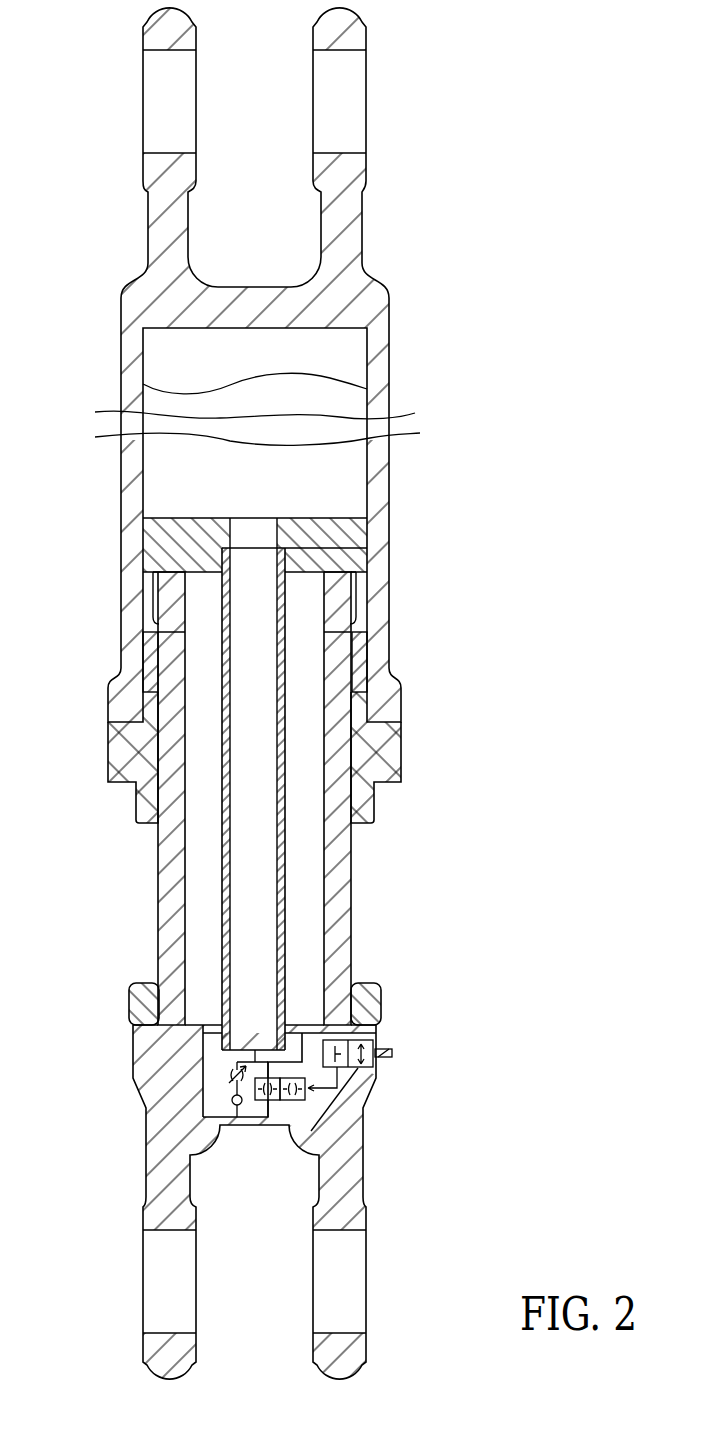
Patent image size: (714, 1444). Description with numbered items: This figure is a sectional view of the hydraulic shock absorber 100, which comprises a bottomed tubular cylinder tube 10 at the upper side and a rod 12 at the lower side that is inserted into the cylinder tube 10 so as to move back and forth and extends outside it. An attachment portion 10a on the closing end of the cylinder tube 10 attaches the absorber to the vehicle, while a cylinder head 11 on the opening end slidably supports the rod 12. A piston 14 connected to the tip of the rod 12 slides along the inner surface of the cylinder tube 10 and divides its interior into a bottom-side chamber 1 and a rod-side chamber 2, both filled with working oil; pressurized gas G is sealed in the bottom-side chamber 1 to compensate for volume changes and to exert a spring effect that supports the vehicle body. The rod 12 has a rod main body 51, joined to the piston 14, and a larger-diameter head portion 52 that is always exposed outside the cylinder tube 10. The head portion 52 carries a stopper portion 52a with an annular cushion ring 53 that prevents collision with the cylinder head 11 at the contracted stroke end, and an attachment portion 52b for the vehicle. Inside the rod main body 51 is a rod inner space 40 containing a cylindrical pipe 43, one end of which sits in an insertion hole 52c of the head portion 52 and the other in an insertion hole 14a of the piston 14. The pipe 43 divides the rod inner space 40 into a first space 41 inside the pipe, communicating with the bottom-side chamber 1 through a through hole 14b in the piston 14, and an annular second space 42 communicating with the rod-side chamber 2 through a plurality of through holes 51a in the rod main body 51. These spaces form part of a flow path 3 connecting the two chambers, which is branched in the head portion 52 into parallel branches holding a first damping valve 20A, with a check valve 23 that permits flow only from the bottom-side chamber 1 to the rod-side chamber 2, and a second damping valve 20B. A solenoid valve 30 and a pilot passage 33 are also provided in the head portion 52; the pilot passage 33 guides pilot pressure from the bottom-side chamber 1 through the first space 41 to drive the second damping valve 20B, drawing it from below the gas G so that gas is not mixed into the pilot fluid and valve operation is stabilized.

The hydraulic shock absorber 100 is at (450, 170).
The cylinder tube 10 is at (386, 397).
The attachment portion 10a is at (168, 152).
The bottom-side chamber 1 is at (165, 470).
The pressurized gas G is at (165, 352).
The piston 14 is at (312, 515).
The insertion hole 14a is at (367, 553).
The through hole 14b is at (253, 528).
The rod inner space 40 is at (251, 799).
The first space 41 is at (250, 846).
The pipe 43 is at (287, 946).
The rod main body 51 is at (315, 798).
The through holes 51a is at (150, 620).
The rod-side chamber 2 is at (150, 660).
The second space 42 is at (205, 712).
The cylinder head 11 is at (381, 770).
The rod 12 is at (356, 846).
The cushion ring 53 is at (209, 979).
The stopper portion 52a is at (140, 1005).
The head portion 52 is at (252, 1199).
The attachment portion 52b is at (340, 1232).
The insertion hole 52c is at (223, 1035).
The flow path 3 is at (203, 1070).
The first damping valve 20A is at (227, 1082).
The check valve 23 is at (232, 1102).
The second damping valve 20B is at (275, 1101).
The pilot passage 33 is at (338, 1040).
The solenoid valve 30 is at (375, 1073).